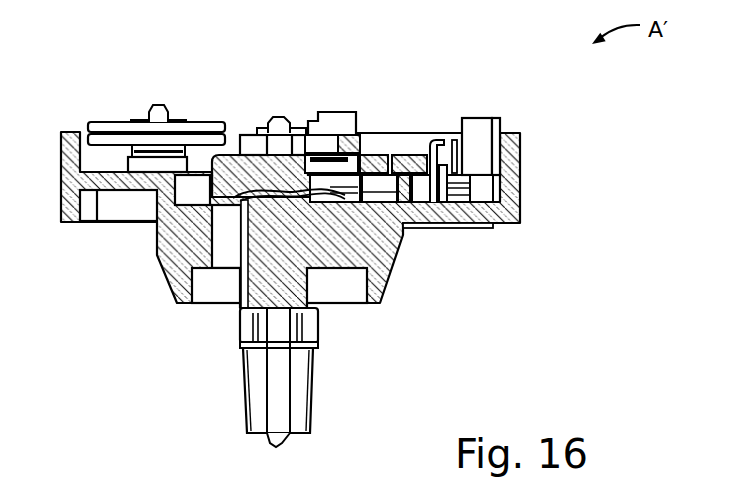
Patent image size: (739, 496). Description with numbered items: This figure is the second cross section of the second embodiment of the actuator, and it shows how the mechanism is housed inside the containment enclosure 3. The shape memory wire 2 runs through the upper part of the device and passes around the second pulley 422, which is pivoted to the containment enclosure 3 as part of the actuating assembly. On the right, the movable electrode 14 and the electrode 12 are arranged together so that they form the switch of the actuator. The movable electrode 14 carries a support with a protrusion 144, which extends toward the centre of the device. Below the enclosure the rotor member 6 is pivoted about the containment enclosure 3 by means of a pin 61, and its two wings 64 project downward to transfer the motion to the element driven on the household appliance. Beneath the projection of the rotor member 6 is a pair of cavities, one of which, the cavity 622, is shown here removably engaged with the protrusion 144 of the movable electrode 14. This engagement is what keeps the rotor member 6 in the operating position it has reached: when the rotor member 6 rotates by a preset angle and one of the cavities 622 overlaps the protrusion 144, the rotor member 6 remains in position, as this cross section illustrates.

The second pulley 422 is at (103, 128).
The shape memory wire 2 is at (230, 132).
The movable electrode 14 is at (432, 170).
The electrode 12 is at (497, 147).
The containment enclosure 3 is at (507, 220).
The cavity 622 is at (330, 190).
The protrusion 144 is at (345, 198).
The rotor member 6 is at (326, 328).
The wings 64 is at (307, 390).
The pin 61 is at (282, 438).